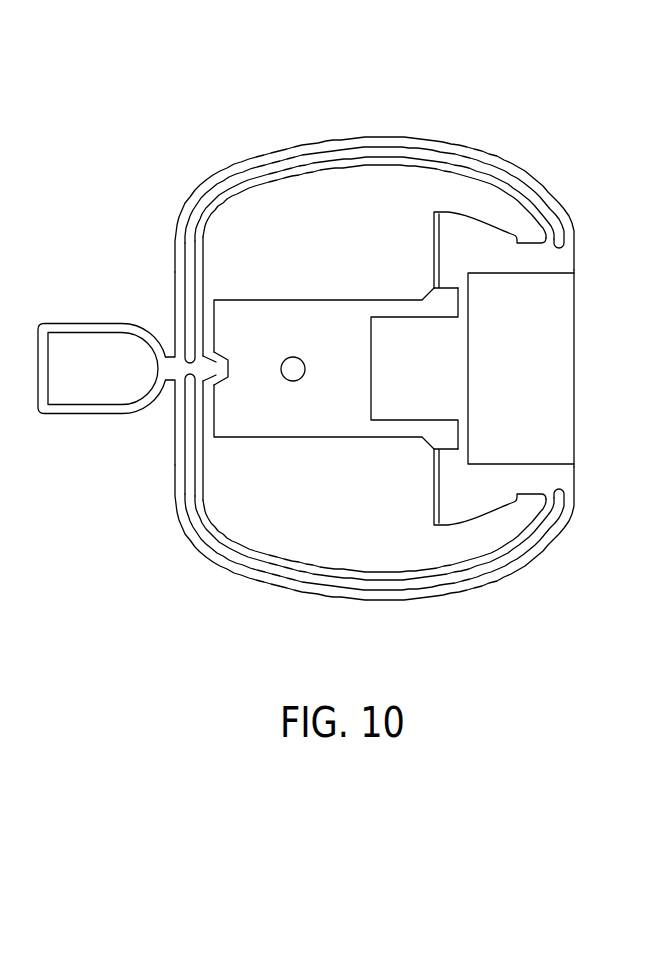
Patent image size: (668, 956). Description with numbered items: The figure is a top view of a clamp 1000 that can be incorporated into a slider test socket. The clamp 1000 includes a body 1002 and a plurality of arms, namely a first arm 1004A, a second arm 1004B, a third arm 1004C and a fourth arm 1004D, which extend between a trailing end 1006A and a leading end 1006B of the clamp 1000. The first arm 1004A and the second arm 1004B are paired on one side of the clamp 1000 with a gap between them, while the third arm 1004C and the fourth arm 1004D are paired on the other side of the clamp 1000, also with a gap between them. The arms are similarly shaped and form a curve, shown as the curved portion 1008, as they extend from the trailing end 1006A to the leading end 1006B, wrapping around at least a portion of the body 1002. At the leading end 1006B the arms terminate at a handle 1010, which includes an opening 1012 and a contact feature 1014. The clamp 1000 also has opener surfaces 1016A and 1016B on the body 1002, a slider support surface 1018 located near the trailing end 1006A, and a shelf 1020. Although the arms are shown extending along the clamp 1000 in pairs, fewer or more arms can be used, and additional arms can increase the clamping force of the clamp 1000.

The clamp 1000 is at (122, 126).
The body 1002 is at (496, 259).
The first arm 1004A is at (541, 181).
The second arm 1004B is at (447, 170).
The third arm 1004C is at (460, 587).
The fourth arm 1004D is at (358, 573).
The trailing end 1006A is at (575, 263).
The leading end 1006B is at (182, 315).
The curved portion 1008 is at (341, 139).
The handle 1010 is at (43, 329).
The opening 1012 is at (100, 375).
The contact feature 1014 is at (217, 348).
The opener surface 1016A is at (433, 227).
The opener surface 1016B is at (433, 485).
The slider support surface 1018 is at (433, 268).
The shelf 1020 is at (297, 310).